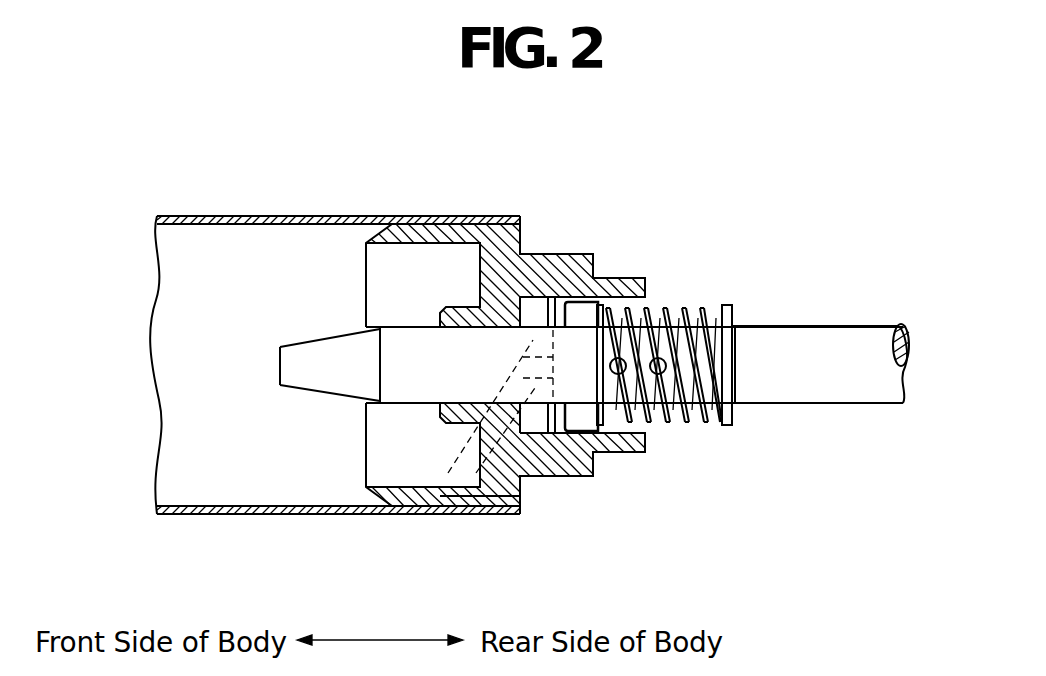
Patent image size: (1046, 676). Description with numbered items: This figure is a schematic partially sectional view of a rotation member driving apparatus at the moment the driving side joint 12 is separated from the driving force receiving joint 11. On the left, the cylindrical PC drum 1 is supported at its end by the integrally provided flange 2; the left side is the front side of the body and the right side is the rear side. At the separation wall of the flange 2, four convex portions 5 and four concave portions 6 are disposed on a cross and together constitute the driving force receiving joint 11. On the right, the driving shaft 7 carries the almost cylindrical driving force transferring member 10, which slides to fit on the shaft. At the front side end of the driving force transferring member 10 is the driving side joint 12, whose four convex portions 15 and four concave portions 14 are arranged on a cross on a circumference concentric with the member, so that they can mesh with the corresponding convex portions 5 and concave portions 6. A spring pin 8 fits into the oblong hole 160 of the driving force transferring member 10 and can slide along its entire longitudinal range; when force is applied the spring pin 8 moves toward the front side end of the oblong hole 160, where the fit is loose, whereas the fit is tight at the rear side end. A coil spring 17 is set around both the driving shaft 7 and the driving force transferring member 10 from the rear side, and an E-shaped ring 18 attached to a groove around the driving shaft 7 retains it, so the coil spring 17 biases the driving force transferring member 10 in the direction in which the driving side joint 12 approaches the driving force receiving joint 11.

The PC drum 1 is at (226, 216).
The flange 2 is at (513, 216).
The convex portions 5 is at (439, 514).
The concave portions 6 is at (468, 514).
The driving shaft 7 is at (840, 393).
The spring pin 8 is at (644, 310).
The driving force transferring member 10 is at (680, 438).
The driving force receiving joint 11 is at (508, 556).
The driving side joint 12 is at (565, 206).
The concave portions 14 is at (590, 318).
The convex portions 15 is at (584, 300).
The coil spring 17 is at (710, 310).
The E-shaped ring 18 is at (735, 425).
The oblong hole 160 is at (670, 306).